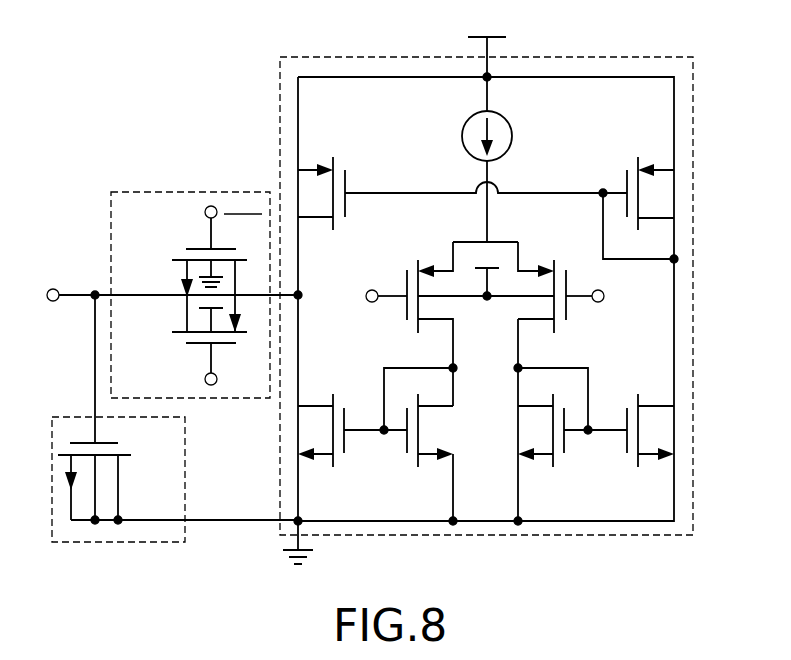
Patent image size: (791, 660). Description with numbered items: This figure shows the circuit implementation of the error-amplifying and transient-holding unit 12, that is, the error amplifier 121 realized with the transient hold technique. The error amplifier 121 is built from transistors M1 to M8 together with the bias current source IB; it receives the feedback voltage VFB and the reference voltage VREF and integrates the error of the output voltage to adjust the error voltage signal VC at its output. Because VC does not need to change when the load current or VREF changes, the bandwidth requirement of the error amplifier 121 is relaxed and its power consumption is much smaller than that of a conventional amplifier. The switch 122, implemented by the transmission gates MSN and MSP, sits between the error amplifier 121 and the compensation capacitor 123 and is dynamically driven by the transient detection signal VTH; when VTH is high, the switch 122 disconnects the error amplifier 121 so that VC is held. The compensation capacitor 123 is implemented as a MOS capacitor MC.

The error-amplifying and transient-holding unit 12 is at (246, 50).
The error amplifier 121 is at (693, 210).
The switch 122 is at (160, 192).
The compensation capacitor 123 is at (124, 543).